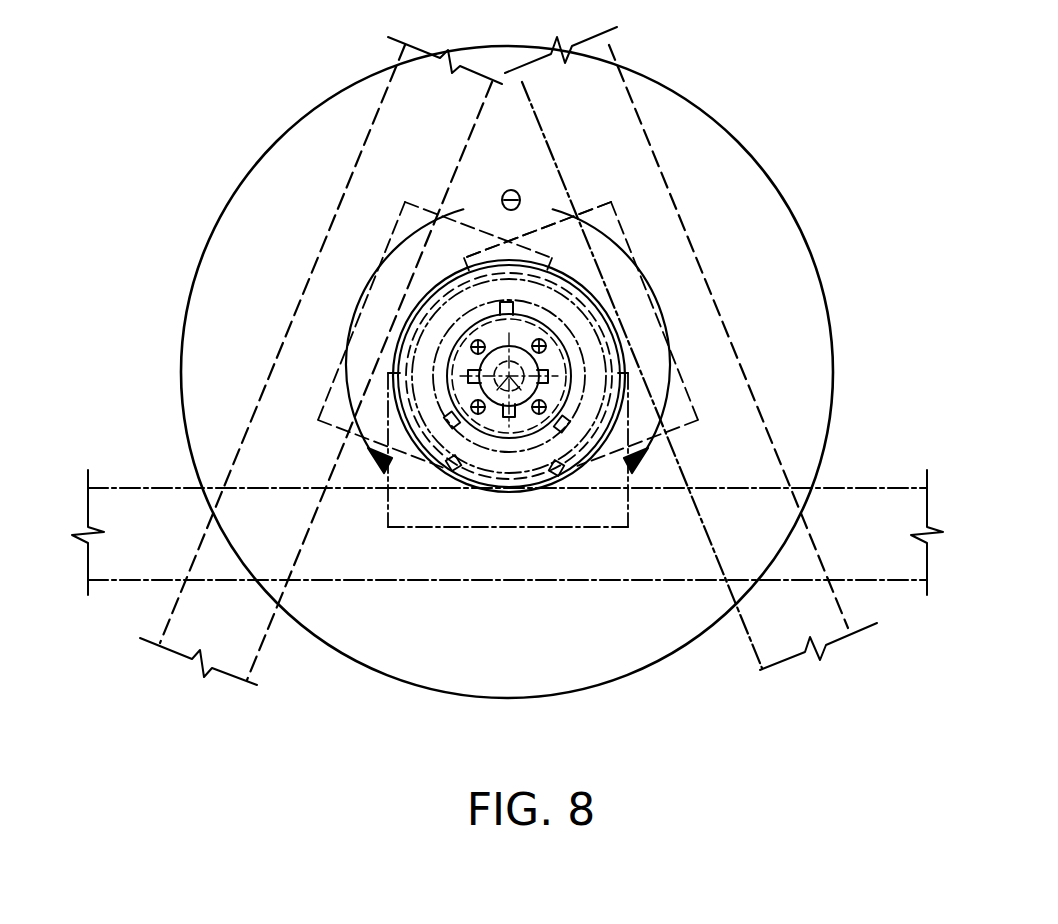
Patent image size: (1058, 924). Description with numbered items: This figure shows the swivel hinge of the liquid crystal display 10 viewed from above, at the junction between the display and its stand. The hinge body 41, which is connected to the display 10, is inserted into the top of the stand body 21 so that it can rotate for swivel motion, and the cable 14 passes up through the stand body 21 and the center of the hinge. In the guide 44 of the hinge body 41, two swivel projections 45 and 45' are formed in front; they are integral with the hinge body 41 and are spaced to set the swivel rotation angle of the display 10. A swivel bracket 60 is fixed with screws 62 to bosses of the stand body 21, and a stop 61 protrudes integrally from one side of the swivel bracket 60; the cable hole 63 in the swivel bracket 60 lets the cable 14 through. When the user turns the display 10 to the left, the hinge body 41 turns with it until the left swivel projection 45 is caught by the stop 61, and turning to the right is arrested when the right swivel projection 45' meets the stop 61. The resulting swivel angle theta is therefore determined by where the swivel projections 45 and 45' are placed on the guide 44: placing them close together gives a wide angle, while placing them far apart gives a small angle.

The liquid crystal display 10 is at (672, 540).
The cable 14 is at (543, 222).
The stand body 21 is at (392, 363).
The hinge body 41 is at (645, 455).
The guide 44 is at (468, 326).
The swivel projection 45 is at (428, 573).
The swivel projection 45' is at (607, 585).
The swivel bracket 60 is at (510, 420).
The stop 61 is at (517, 306).
The screws 62 is at (471, 343).
The cable hole 63 is at (546, 372).